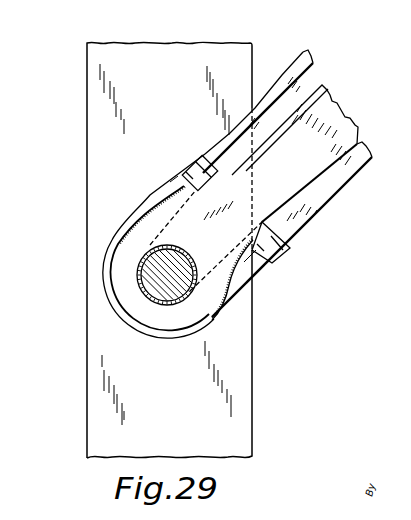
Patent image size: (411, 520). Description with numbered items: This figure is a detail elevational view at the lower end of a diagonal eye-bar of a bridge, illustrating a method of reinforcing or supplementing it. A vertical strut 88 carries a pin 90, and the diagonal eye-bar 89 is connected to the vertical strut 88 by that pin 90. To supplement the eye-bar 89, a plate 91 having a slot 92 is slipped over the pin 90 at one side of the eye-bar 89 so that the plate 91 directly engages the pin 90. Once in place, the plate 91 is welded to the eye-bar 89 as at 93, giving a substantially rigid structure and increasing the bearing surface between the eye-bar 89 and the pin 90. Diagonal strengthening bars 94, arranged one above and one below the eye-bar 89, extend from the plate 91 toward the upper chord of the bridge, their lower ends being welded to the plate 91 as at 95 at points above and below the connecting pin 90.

The vertical strut 88 is at (244, 51).
The diagonal eye-bar 89 is at (333, 105).
The pin 90 is at (160, 286).
The plate 91 is at (170, 182).
The slot 92 is at (212, 263).
The weld 93 is at (156, 211).
The diagonal strengthening bar 94 is at (311, 56).
The weld 95 is at (186, 154).